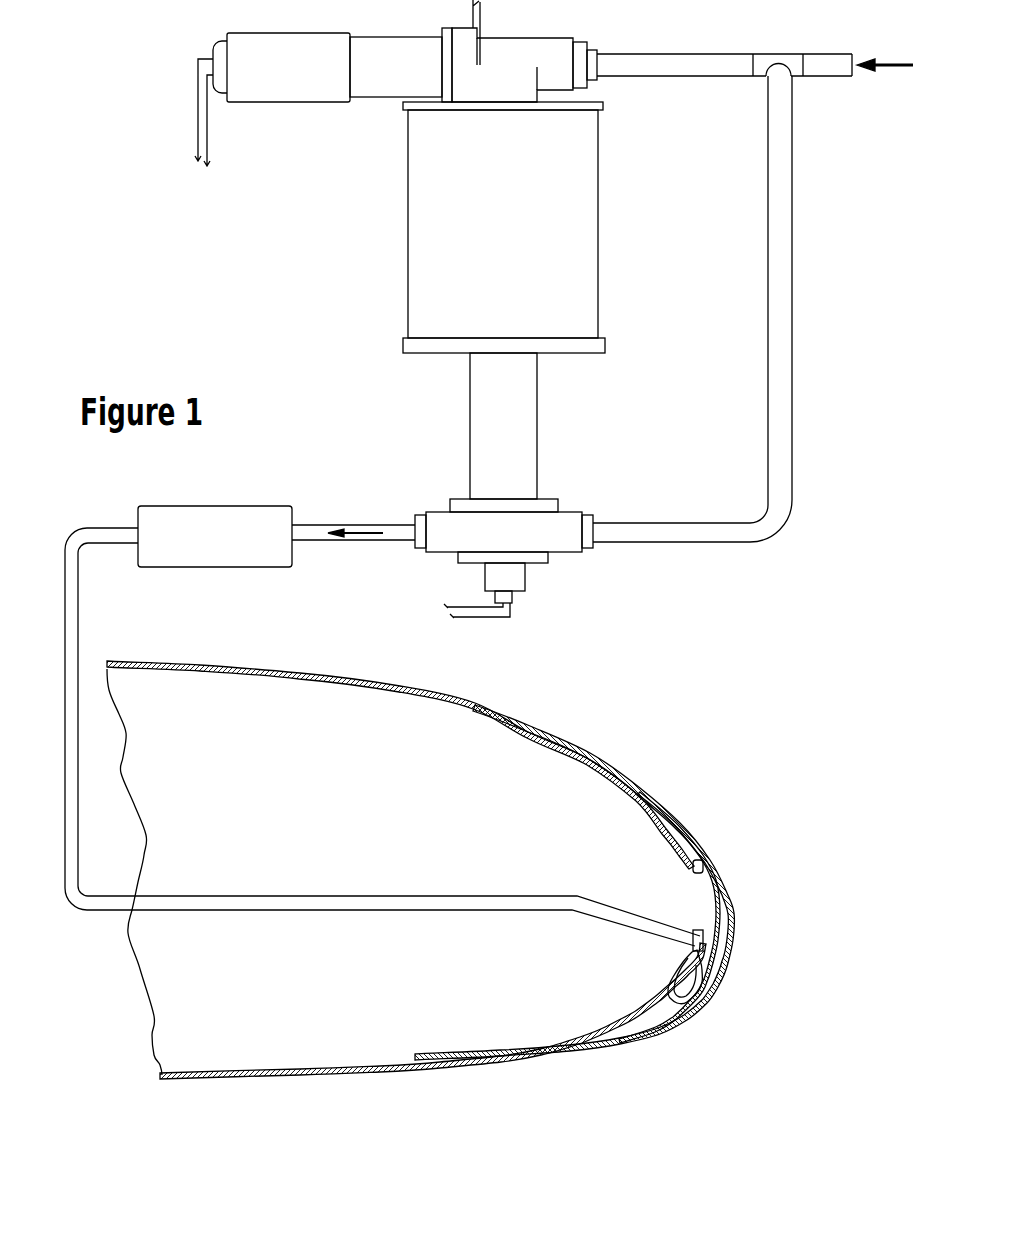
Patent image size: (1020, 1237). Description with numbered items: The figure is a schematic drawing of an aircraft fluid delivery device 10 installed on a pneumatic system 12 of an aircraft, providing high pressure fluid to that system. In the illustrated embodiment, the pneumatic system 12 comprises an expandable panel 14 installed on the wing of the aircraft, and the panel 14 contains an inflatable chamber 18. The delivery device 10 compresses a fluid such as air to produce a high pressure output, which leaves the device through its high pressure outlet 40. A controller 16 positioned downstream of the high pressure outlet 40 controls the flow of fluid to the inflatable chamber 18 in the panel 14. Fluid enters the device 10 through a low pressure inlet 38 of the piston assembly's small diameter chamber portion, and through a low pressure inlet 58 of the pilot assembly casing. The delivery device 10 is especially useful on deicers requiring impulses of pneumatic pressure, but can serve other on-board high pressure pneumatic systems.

The aircraft fluid delivery device 10 is at (627, 261).
The pneumatic system 12 is at (716, 810).
The expandable panel 14 is at (755, 912).
The controller 16 is at (190, 506).
The inflatable chamber 18 is at (693, 980).
The low pressure inlet 38 is at (623, 530).
The high pressure outlet 40 is at (322, 525).
The low pressure inlet 58 is at (618, 65).